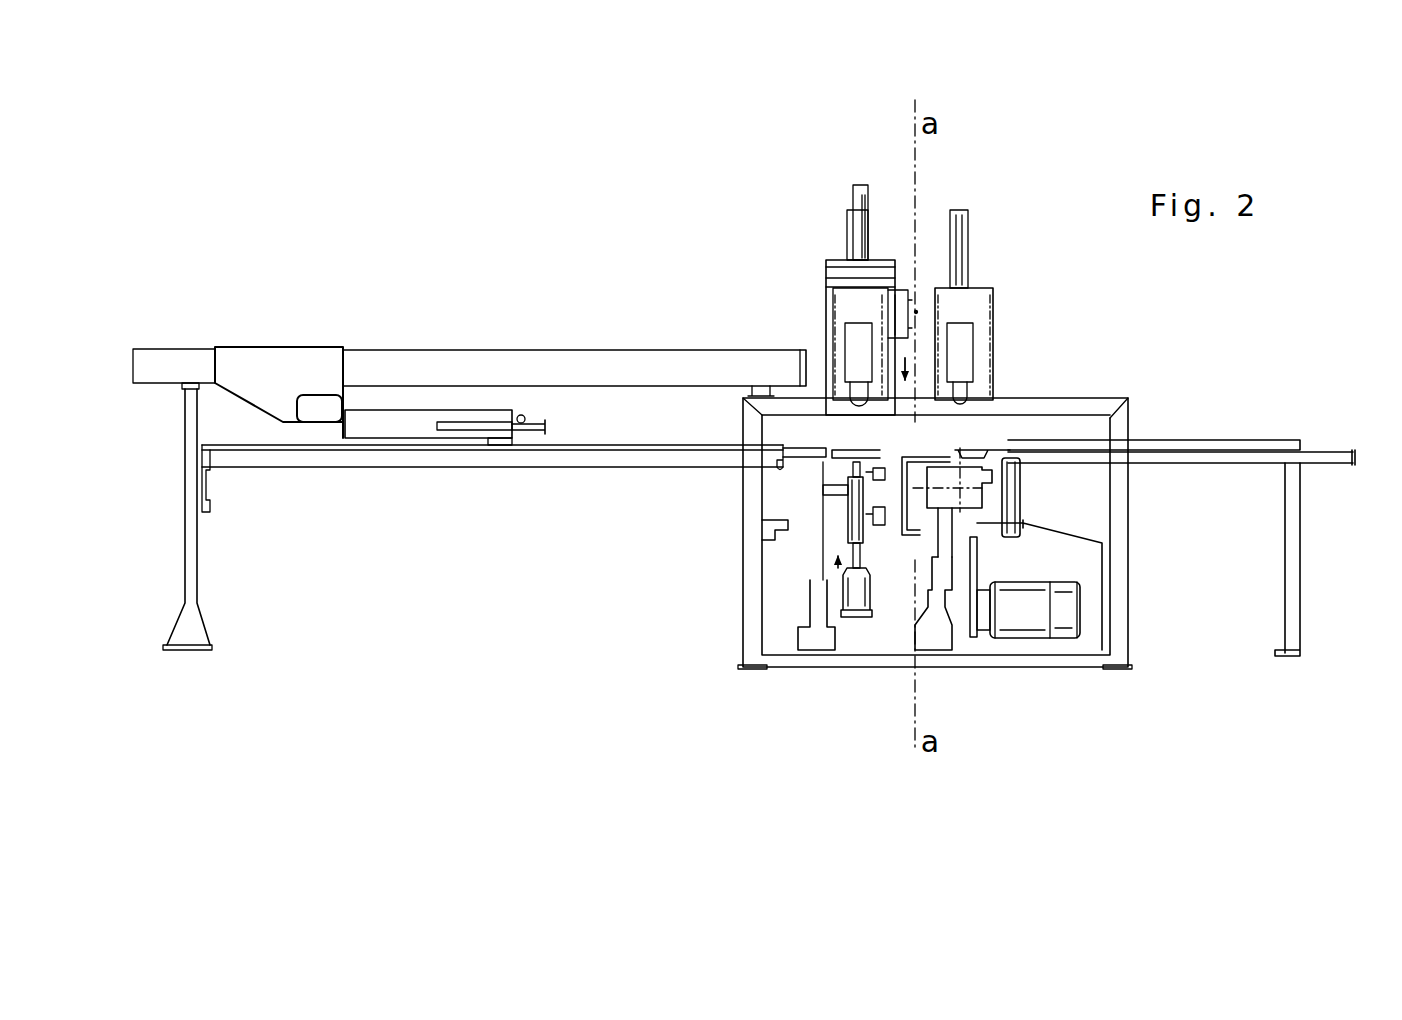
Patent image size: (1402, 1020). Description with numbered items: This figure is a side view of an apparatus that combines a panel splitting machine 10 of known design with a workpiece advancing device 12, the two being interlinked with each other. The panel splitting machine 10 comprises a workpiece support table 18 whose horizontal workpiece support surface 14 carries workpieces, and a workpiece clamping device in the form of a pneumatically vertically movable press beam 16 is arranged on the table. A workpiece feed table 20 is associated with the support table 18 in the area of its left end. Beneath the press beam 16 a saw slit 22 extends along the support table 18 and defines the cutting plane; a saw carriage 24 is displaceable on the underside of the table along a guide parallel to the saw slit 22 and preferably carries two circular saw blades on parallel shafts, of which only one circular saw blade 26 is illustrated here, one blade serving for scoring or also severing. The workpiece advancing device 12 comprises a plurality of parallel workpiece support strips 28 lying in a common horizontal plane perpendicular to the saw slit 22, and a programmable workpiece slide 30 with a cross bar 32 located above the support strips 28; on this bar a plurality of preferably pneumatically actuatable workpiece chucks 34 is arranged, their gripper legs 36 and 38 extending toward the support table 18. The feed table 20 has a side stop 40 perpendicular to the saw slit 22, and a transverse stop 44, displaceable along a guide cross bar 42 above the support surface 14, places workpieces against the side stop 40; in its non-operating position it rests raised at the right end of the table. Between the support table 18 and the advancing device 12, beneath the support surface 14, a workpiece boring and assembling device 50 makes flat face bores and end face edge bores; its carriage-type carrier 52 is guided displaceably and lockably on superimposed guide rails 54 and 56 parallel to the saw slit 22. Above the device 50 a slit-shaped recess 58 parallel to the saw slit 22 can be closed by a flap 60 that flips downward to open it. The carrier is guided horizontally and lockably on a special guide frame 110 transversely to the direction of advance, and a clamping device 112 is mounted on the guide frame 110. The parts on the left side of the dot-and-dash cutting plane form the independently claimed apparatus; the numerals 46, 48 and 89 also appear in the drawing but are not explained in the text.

The panel splitting machine 10 is at (1100, 674).
The workpiece advancing device 12 is at (343, 311).
The workpiece support surface 14 is at (988, 453).
The press beam 16 is at (967, 338).
The workpiece support table 18 is at (814, 445).
The workpiece feed table 20 is at (1340, 460).
The saw slit 22 is at (958, 452).
The saw carriage 24 is at (950, 538).
The circular saw blade 26 is at (982, 490).
The workpiece support strips 28 is at (311, 458).
The programmable workpiece slide 30 is at (236, 342).
The cross bar 32 is at (320, 400).
The workpiece chucks 34 is at (420, 416).
The gripper leg 36 is at (515, 413).
The gripper leg 38 is at (515, 446).
The side stop 40 is at (1262, 445).
The guide cross bar 42 is at (916, 298).
The transverse stop 44 is at (832, 258).
The nozzle 46 is at (542, 418).
The slide rod 48 is at (472, 428).
The workpiece boring and assembling device 50 is at (836, 535).
The carriage-type carrier 52 is at (843, 532).
The guide rail 54 is at (888, 452).
The guide rail 56 is at (881, 527).
The slit-shaped recess 58 is at (790, 468).
The flap 60 is at (838, 453).
The motor 89 is at (1120, 587).
The guide frame 110 is at (910, 456).
The clamping device 112 is at (879, 248).